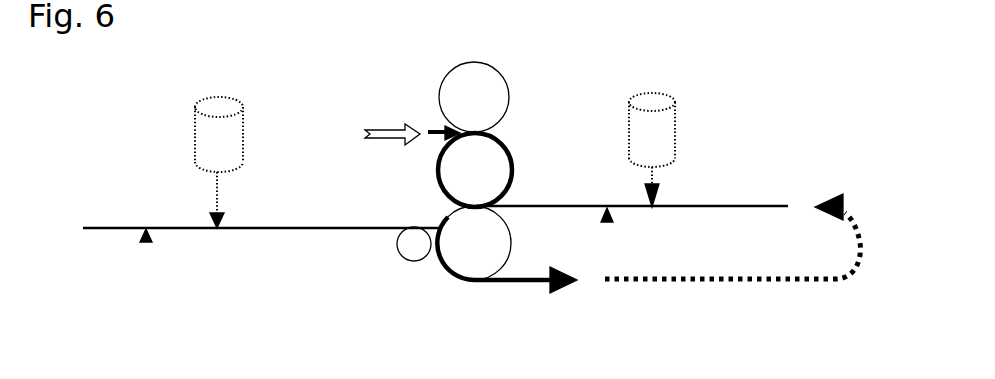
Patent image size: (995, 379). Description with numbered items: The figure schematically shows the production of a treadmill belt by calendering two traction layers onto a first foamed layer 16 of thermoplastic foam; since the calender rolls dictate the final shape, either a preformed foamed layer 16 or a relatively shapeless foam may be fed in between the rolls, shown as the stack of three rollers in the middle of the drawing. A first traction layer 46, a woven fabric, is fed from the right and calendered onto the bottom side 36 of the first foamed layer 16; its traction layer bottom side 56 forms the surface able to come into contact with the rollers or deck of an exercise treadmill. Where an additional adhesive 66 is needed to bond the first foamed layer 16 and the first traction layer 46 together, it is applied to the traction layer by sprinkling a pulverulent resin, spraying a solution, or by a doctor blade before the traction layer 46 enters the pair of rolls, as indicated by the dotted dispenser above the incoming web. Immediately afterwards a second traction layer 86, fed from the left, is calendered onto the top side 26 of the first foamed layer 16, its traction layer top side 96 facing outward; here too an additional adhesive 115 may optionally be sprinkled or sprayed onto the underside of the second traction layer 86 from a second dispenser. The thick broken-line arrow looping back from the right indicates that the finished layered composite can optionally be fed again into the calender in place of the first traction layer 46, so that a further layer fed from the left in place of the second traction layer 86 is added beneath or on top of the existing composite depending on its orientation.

The first foamed layer 16 is at (511, 153).
The bottom side of the first foamed layer 36 is at (527, 162).
The top side of the first foamed layer 26 is at (432, 212).
The second traction layer 86 is at (164, 222).
The traction layer top side 96 is at (147, 242).
The additional adhesive 115 is at (222, 198).
The traction layer bottom side 56 is at (607, 222).
The additional adhesive 66 is at (653, 177).
The first traction layer 46 is at (763, 203).